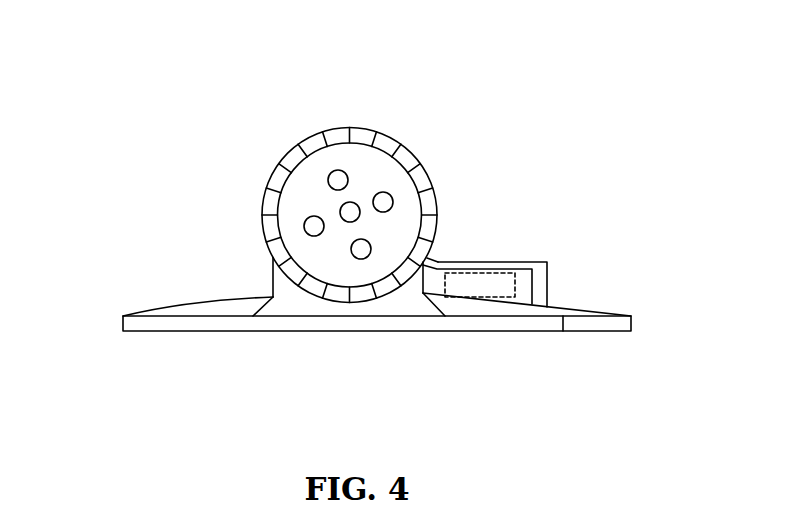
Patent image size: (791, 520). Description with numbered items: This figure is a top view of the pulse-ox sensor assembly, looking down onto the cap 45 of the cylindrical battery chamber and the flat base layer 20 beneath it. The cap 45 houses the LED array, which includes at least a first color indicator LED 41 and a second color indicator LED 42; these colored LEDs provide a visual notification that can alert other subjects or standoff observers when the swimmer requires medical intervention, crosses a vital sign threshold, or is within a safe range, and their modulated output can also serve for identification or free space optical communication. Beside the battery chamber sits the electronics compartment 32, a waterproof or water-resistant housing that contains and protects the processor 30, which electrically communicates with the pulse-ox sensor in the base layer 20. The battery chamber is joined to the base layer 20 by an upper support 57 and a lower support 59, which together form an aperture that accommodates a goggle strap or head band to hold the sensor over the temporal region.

The base layer 20 is at (613, 323).
The processor 30 is at (480, 285).
The electronics compartment 32 is at (548, 282).
The first color indicator LED 41 is at (383, 200).
The second color indicator LED 42 is at (361, 249).
The cap 45 is at (422, 180).
The upper support 57 is at (293, 300).
The lower support 59 is at (441, 246).